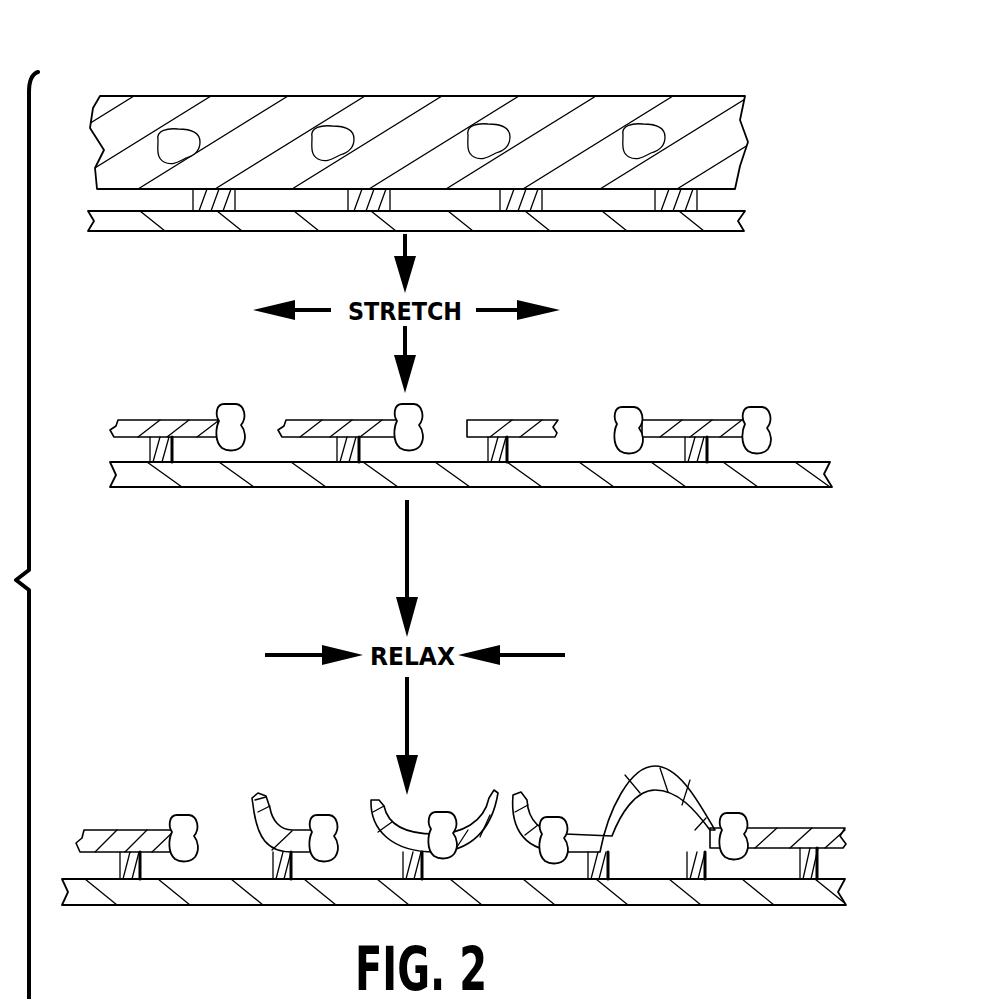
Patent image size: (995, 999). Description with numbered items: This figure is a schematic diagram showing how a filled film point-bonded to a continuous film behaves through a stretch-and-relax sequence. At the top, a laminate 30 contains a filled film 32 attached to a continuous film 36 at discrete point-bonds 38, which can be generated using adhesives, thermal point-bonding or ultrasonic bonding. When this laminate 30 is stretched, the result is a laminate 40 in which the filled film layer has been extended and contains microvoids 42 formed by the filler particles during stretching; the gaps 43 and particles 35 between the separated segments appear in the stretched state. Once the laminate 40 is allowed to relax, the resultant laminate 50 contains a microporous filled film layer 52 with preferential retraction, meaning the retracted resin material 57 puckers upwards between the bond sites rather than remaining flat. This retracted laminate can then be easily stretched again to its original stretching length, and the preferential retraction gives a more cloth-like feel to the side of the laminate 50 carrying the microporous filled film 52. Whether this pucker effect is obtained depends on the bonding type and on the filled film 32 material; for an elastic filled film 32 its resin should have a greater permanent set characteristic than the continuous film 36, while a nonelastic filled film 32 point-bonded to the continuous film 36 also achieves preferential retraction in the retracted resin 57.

The laminate 30 is at (782, 80).
The filled film 32 is at (723, 145).
The continuous film 36 is at (730, 210).
The point-bonds 38 is at (390, 195).
The laminate 40 is at (792, 381).
The gap between segments 43 is at (575, 445).
The bead 35 is at (627, 415).
The microvoids 42 is at (693, 420).
The laminate 50 is at (804, 769).
The retracted resin material 57 is at (662, 765).
The microporous filled film layer 52 is at (837, 840).